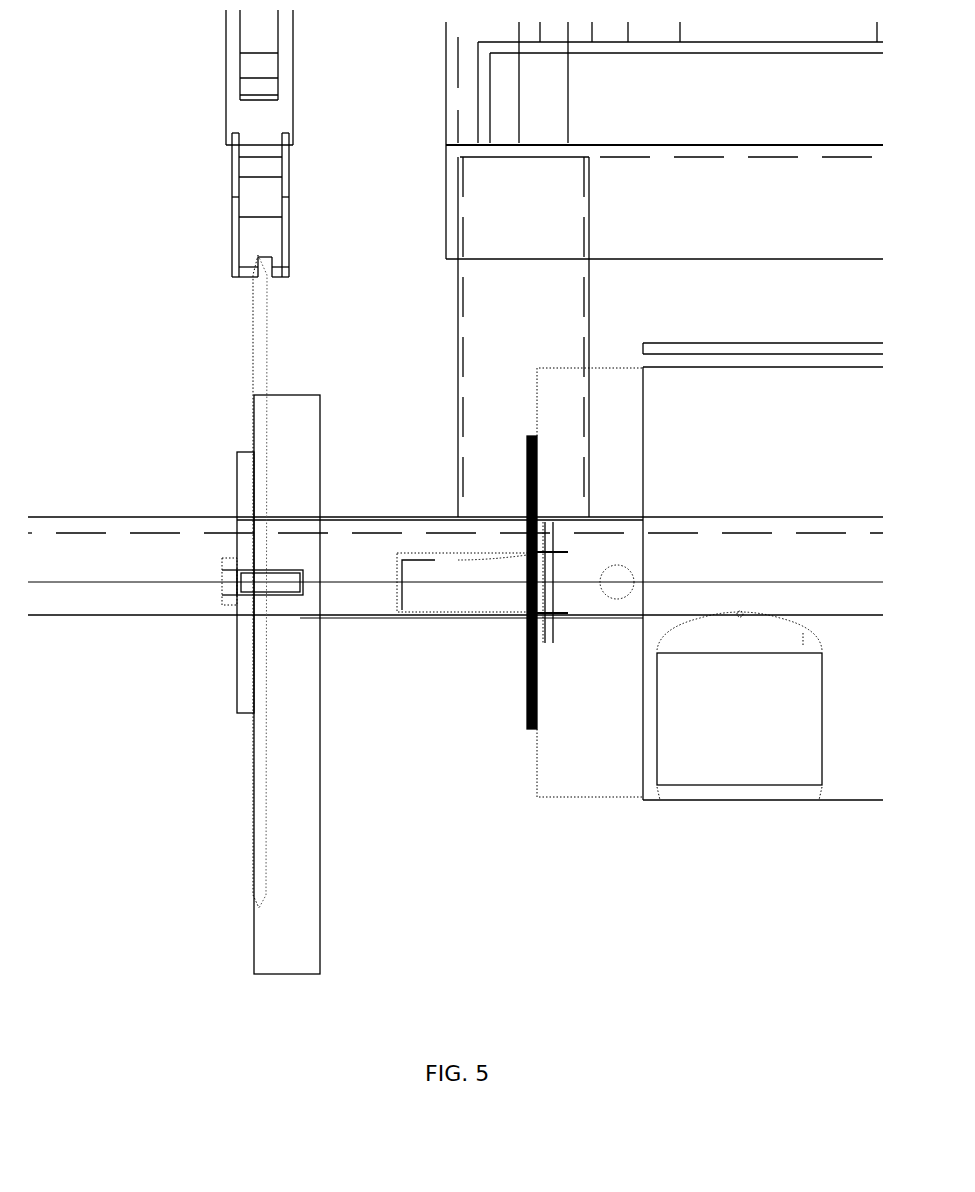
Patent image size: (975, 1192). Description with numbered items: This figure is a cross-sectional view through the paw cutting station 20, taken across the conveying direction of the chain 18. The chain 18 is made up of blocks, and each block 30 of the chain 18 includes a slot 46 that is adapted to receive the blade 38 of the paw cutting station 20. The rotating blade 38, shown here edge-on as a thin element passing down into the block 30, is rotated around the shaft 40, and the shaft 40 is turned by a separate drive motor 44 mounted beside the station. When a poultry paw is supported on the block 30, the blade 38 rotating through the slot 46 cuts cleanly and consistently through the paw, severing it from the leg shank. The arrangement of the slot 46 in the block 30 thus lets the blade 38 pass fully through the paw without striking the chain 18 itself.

The chain 18 is at (204, 186).
The paw cutting station 20 is at (458, 892).
The block 30 is at (252, 242).
The rotating blade 38 is at (258, 375).
The shaft 40 is at (342, 600).
The drive motor 44 is at (712, 466).
The slot 46 is at (274, 244).